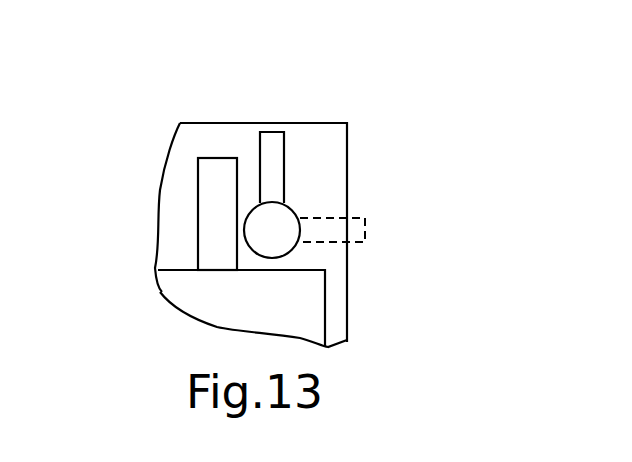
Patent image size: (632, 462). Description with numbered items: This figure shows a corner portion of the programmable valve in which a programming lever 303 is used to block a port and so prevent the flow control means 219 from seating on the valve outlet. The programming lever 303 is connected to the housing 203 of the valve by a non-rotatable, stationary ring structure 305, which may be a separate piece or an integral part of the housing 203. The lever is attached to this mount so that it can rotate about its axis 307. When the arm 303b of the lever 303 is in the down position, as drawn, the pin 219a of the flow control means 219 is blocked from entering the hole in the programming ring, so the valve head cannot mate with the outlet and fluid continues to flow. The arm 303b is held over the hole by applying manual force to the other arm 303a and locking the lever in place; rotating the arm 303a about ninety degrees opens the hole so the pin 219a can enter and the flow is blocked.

The stationary ring structure 305 is at (163, 150).
The housing 203 is at (335, 153).
The flow control means 219 is at (325, 305).
The pin 219a is at (217, 158).
The arm 303b is at (284, 141).
The axis 307 is at (293, 212).
The programming lever 303 is at (312, 171).
The arm 303a is at (365, 241).